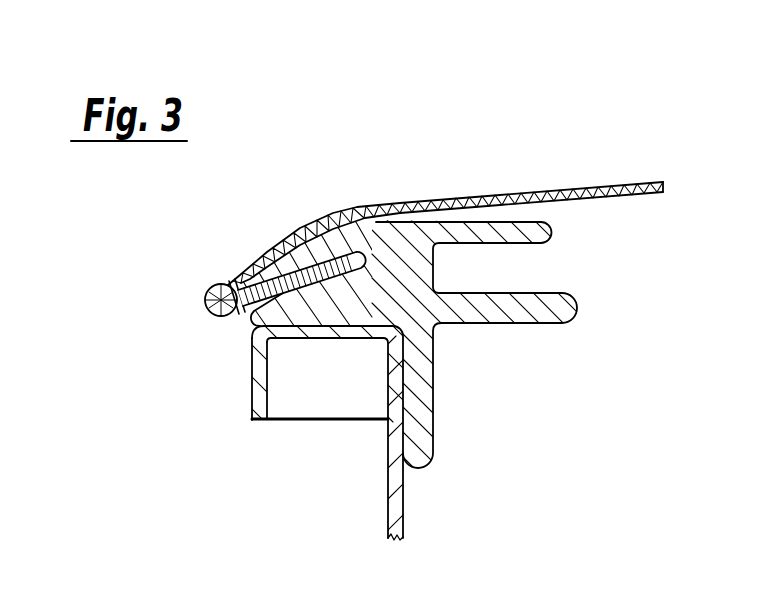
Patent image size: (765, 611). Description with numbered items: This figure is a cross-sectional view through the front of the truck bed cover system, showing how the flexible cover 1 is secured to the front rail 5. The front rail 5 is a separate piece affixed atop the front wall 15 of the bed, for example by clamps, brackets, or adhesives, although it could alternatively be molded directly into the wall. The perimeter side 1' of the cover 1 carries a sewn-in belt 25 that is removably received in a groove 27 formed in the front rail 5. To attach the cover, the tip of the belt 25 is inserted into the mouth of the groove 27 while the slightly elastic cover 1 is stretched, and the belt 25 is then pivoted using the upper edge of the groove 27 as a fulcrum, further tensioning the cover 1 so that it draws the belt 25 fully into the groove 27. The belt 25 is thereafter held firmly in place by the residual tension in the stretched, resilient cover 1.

The cover 1 is at (445, 148).
The perimeter sides 1' is at (147, 263).
The front rail 5 is at (373, 235).
The belt 25 is at (305, 224).
The front wall 15 is at (388, 500).
The groove 27 is at (252, 357).